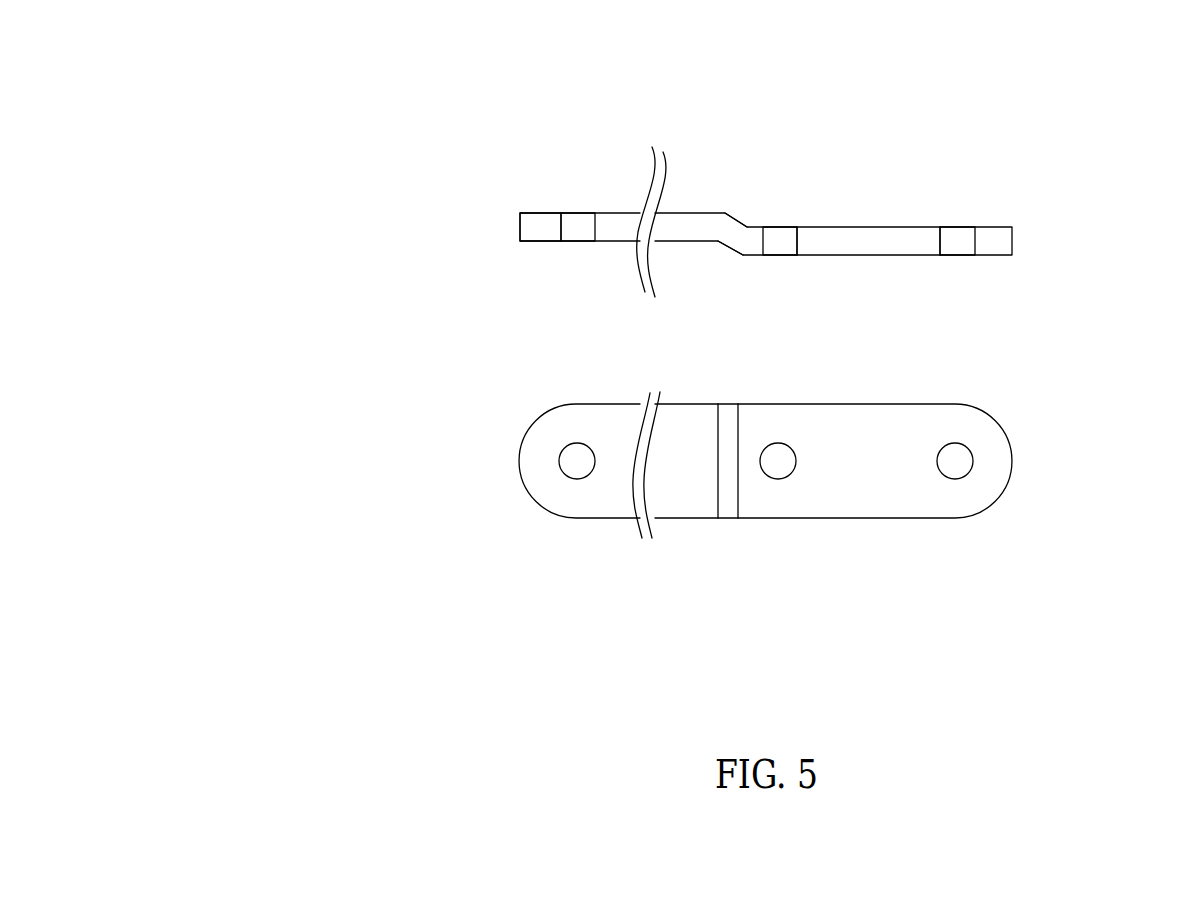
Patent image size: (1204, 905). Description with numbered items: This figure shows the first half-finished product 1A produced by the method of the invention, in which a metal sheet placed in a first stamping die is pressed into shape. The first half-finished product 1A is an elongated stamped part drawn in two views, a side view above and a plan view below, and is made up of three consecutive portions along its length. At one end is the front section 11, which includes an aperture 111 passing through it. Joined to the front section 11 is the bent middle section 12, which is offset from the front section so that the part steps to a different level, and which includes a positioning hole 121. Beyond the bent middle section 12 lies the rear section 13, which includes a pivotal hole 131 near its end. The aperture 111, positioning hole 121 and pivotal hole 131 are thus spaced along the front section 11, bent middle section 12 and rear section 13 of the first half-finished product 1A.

The first half-finished product 1A is at (326, 130).
The front section 11 is at (518, 243).
The aperture 111 is at (582, 232).
The bent middle section 12 is at (740, 256).
The positioning hole 121 is at (772, 235).
The rear section 13 is at (995, 239).
The pivotal hole 131 is at (958, 233).